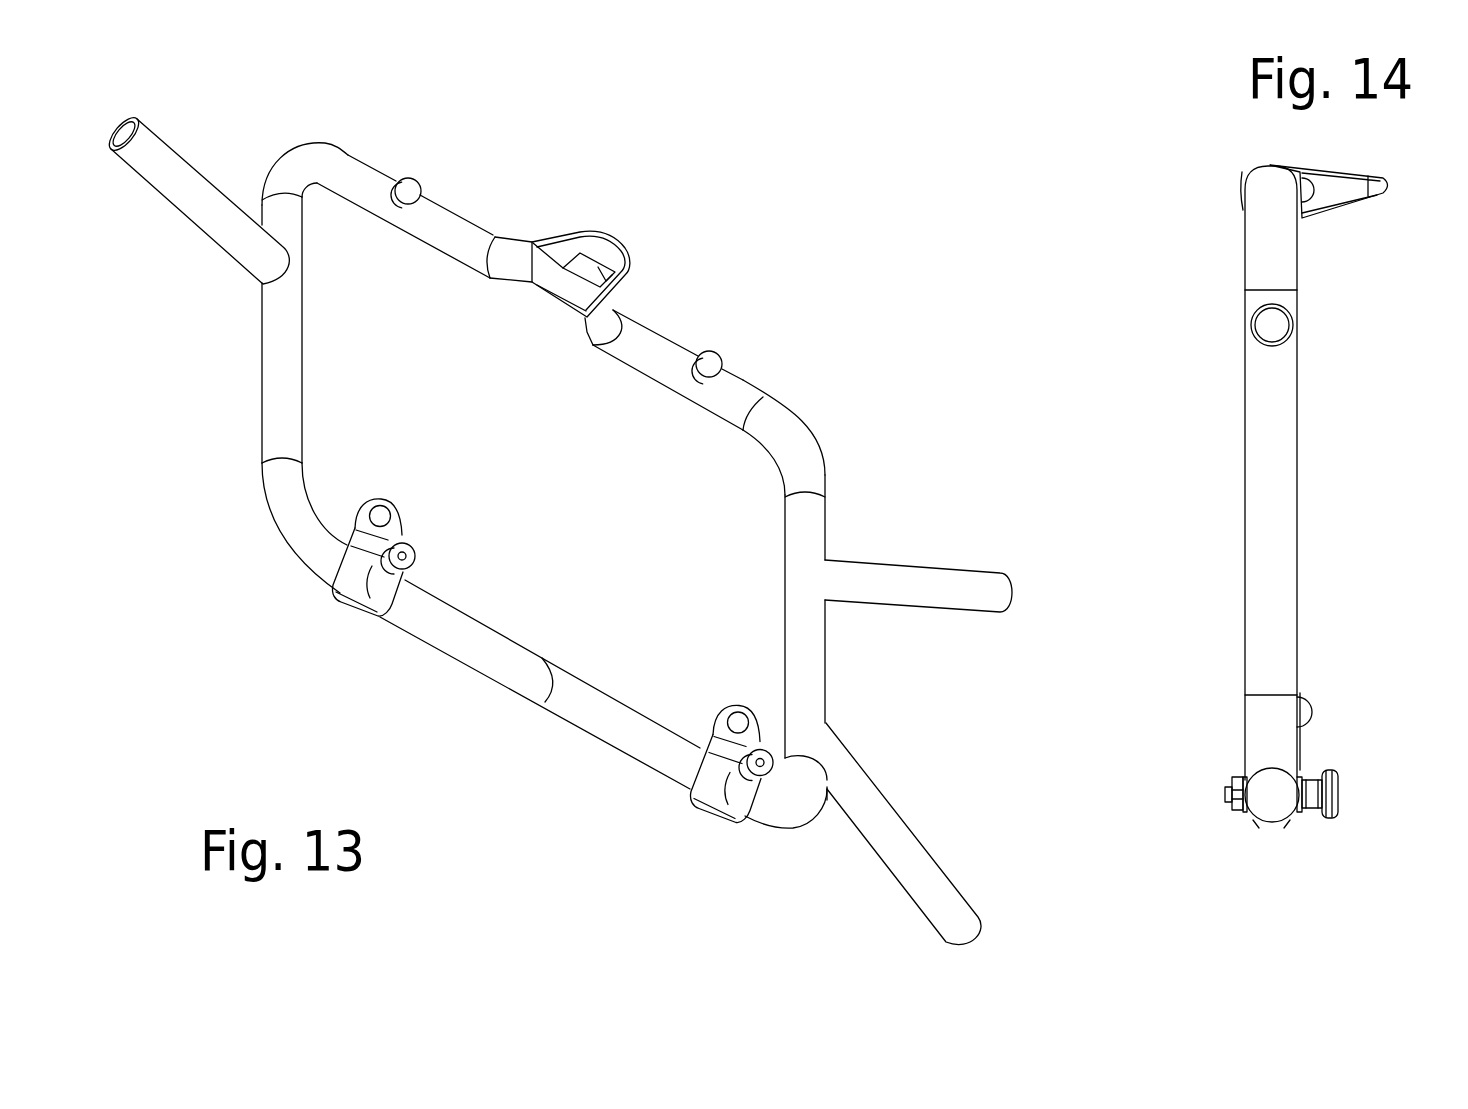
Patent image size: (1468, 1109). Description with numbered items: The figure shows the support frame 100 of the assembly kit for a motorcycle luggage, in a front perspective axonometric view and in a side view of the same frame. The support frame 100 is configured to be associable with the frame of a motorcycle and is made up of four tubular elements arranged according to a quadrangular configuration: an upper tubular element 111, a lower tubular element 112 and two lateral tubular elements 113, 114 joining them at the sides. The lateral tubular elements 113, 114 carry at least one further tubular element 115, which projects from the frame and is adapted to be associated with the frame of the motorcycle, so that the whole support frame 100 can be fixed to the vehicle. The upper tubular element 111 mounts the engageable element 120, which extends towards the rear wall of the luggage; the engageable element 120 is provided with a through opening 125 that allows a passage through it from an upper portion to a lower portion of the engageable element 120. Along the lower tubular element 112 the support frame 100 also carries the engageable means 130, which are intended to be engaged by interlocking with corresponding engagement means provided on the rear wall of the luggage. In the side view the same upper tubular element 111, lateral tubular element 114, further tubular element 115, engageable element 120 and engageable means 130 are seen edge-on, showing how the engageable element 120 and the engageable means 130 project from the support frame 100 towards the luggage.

In FIG. 13, the support frame 100 is at (800, 452).
In FIG. 14, the support frame 100 is at (1280, 583).
In FIG. 13, the upper tubular element 111 is at (737, 397).
In FIG. 13, the lower tubular element 112 is at (592, 715).
In FIG. 13, the lateral tubular element 113 is at (807, 660).
In FIG. 13, the lateral tubular element 114 is at (285, 361).
In FIG. 14, the lateral tubular element 114 is at (1282, 518).
In FIG. 13, the further tubular element 115 is at (202, 196).
In FIG. 14, the further tubular element 115 is at (1275, 327).
In FIG. 13, the engageable element 120 is at (567, 233).
In FIG. 14, the engageable element 120 is at (1335, 190).
In FIG. 13, the through opening 125 is at (607, 292).
In FIG. 13, the engageable means 130 is at (380, 613).
In FIG. 14, the engageable means 130 is at (1325, 793).